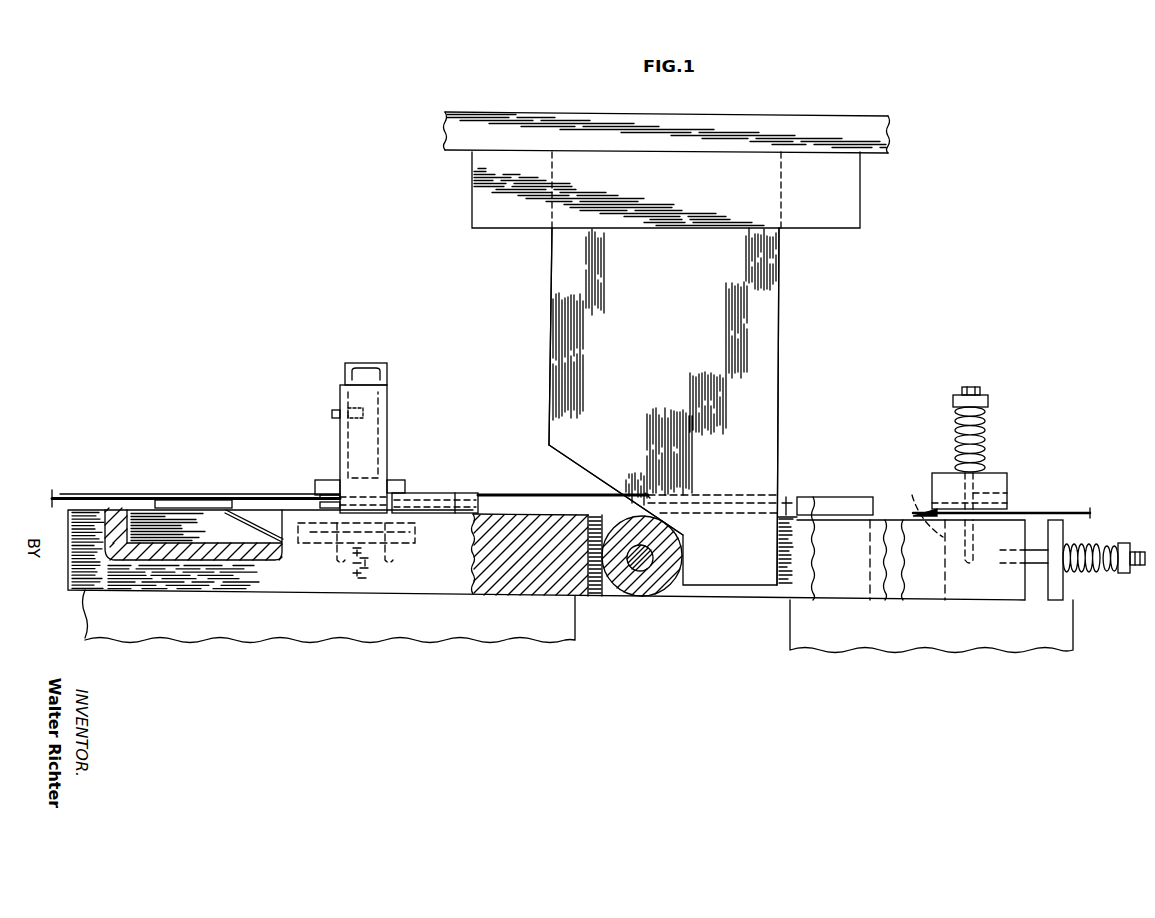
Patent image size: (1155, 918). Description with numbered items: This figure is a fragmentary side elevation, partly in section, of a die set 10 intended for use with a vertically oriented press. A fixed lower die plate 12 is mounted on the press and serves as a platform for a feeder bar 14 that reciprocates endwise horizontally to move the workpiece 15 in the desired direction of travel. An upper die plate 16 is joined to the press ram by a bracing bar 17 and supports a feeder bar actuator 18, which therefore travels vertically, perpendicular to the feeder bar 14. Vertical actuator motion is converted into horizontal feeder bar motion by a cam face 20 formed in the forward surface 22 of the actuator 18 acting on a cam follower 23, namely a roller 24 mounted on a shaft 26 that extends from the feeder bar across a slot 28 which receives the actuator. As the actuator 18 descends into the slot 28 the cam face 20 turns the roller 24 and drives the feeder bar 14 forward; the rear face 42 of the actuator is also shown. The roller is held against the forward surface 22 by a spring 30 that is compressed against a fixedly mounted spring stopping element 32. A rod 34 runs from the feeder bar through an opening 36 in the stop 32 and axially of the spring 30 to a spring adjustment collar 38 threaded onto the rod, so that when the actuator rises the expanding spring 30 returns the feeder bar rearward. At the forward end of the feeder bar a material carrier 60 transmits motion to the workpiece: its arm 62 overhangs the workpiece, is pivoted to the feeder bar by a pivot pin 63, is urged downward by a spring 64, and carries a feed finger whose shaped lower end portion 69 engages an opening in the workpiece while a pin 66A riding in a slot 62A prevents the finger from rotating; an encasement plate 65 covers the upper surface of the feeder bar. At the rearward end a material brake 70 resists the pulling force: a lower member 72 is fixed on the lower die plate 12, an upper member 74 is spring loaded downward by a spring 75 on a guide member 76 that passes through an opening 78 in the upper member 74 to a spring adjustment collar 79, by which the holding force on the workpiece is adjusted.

The die set 10 is at (875, 263).
The fixed lower die plate 12 is at (315, 607).
The feeder bar 14 is at (534, 565).
The workpiece 15 is at (143, 494).
The upper die plate 16 is at (457, 127).
The bracing bar 17 is at (855, 200).
The feeder bar actuator 18 is at (761, 338).
The cam face 20 is at (560, 452).
The forward surface 22 is at (548, 348).
The cam follower 23 is at (654, 576).
The roller 24 is at (638, 587).
The shaft 26 is at (633, 565).
The slot 28 is at (593, 597).
The spring 30 is at (1113, 572).
The spring stopping element 32 is at (1063, 590).
The rod 34 is at (1038, 560).
The opening 36 is at (1077, 533).
The spring adjustment collar 38 is at (1128, 545).
The punch rear face 42 is at (779, 366).
The material carrier 60 is at (367, 428).
The arm 62 is at (340, 449).
The slot 62A is at (343, 430).
The pivot pin 63 is at (415, 524).
The spring 64 is at (375, 570).
The plate 65 is at (807, 503).
The pin 66A is at (333, 413).
The lower end portion 69 is at (318, 487).
The material brake 70 is at (981, 458).
The lower member 72 is at (920, 506).
The upper member 74 is at (995, 482).
The spring 75 is at (983, 458).
The guide member 76 is at (971, 458).
The opening 78 is at (1007, 493).
The spring adjustment collar 79 is at (958, 393).